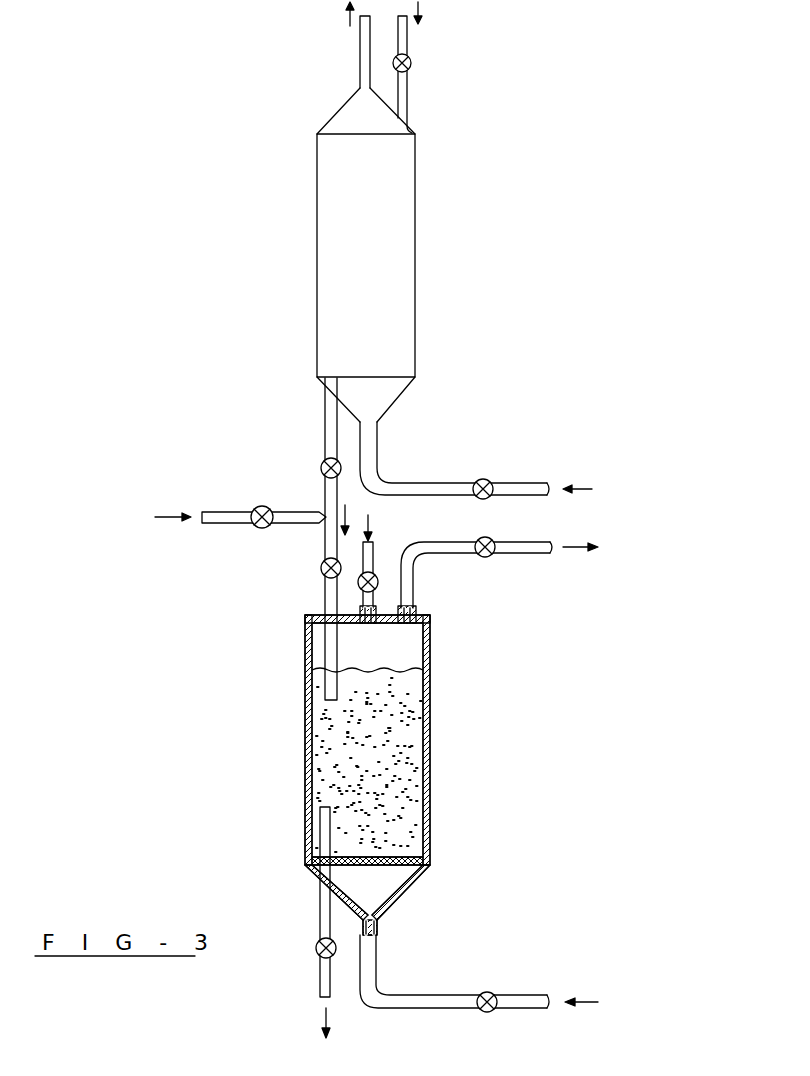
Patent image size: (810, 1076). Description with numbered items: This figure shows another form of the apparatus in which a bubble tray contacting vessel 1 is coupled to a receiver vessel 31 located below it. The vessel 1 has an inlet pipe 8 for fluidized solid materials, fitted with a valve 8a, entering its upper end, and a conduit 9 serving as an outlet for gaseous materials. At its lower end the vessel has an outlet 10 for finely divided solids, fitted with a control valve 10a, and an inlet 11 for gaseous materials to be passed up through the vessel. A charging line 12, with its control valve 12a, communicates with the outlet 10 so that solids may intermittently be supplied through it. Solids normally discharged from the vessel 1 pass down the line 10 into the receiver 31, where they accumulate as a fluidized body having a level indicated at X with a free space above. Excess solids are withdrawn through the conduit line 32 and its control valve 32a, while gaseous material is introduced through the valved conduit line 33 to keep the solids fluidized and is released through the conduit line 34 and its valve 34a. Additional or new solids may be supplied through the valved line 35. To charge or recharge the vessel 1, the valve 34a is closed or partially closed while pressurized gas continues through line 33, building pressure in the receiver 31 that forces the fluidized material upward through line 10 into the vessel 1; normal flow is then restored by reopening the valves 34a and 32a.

The bubble tray column contacting vessel 1 is at (317, 247).
The inlet pipe 8 is at (407, 97).
The valve 8a is at (412, 60).
The conduit 9 is at (360, 52).
The outlet 10 is at (325, 420).
The control valve 10a is at (321, 570).
The inlet 11 is at (515, 487).
The charging line 12 is at (231, 512).
The control valve 12a is at (262, 530).
The receiver vessel 31 is at (430, 753).
The conduit line 32 is at (320, 904).
The control valve 32a is at (316, 948).
The valved conduit line 33 is at (537, 1000).
The conduit line 34 is at (413, 580).
The valve 34a is at (492, 557).
The valved line 35 is at (375, 545).
The level x is at (405, 668).